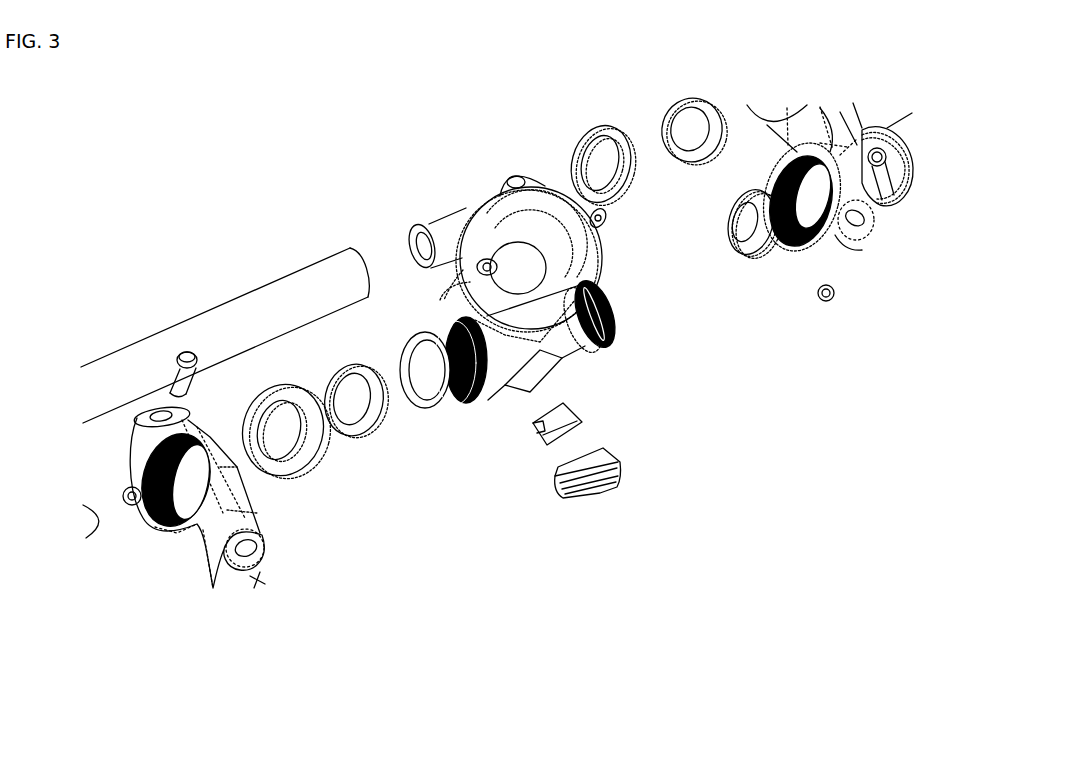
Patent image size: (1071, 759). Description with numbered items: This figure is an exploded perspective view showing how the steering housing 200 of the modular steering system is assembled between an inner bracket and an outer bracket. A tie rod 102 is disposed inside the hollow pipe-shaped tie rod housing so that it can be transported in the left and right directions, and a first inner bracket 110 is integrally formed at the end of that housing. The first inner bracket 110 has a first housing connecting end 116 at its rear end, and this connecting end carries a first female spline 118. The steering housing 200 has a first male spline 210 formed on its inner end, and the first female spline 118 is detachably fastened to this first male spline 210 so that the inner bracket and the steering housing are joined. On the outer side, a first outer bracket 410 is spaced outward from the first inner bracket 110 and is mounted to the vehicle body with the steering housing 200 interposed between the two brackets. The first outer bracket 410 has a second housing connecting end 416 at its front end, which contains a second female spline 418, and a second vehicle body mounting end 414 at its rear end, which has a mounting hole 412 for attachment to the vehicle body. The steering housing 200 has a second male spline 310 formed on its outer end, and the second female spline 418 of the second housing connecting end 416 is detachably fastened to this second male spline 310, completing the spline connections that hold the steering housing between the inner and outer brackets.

The tie rod 102 is at (250, 313).
The first inner bracket 110 is at (788, 198).
The first housing connecting end 116 is at (841, 178).
The first female spline 118 is at (789, 232).
The steering housing 200 is at (533, 308).
The first male spline 210 is at (604, 340).
The second male spline 310 is at (470, 400).
The first outer bracket 410 is at (249, 510).
The mounting hole 412 is at (250, 550).
The second vehicle body mounting end 414 is at (258, 580).
The second housing connecting end 416 is at (207, 434).
The second female spline 418 is at (155, 528).